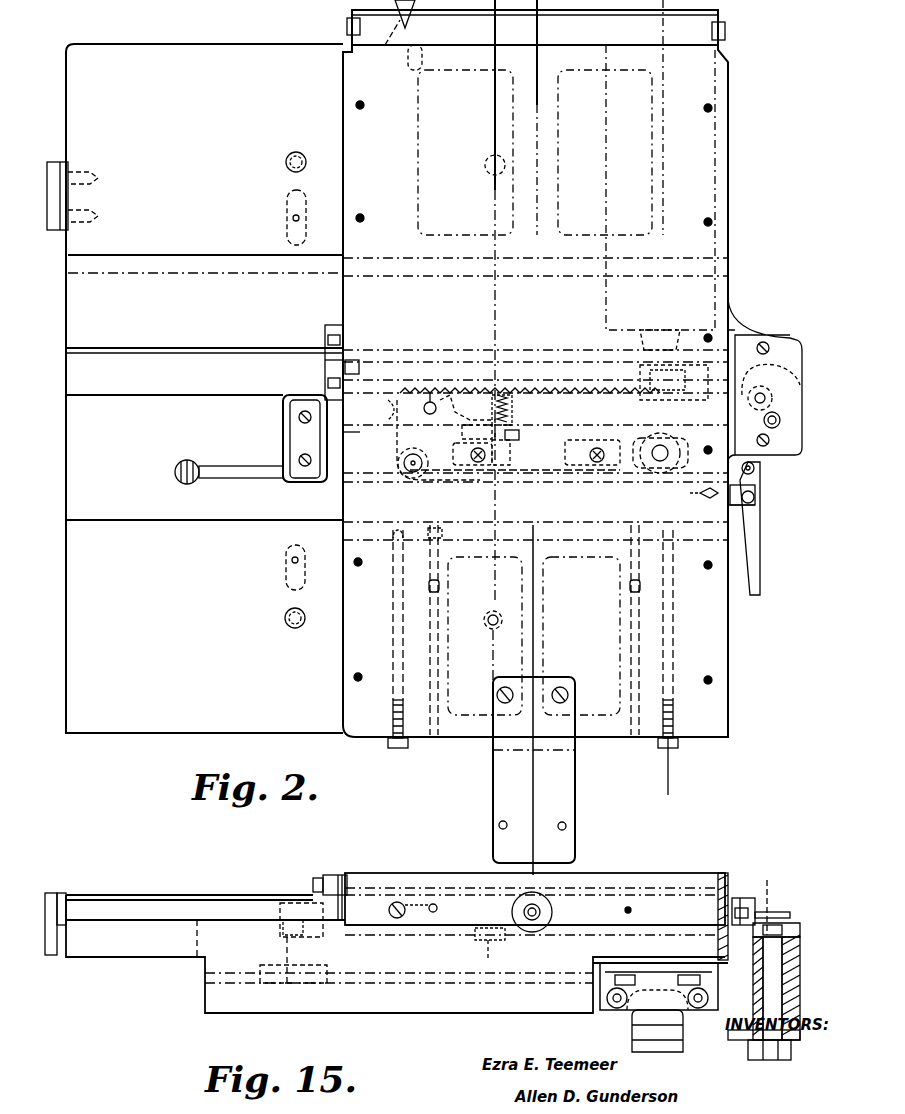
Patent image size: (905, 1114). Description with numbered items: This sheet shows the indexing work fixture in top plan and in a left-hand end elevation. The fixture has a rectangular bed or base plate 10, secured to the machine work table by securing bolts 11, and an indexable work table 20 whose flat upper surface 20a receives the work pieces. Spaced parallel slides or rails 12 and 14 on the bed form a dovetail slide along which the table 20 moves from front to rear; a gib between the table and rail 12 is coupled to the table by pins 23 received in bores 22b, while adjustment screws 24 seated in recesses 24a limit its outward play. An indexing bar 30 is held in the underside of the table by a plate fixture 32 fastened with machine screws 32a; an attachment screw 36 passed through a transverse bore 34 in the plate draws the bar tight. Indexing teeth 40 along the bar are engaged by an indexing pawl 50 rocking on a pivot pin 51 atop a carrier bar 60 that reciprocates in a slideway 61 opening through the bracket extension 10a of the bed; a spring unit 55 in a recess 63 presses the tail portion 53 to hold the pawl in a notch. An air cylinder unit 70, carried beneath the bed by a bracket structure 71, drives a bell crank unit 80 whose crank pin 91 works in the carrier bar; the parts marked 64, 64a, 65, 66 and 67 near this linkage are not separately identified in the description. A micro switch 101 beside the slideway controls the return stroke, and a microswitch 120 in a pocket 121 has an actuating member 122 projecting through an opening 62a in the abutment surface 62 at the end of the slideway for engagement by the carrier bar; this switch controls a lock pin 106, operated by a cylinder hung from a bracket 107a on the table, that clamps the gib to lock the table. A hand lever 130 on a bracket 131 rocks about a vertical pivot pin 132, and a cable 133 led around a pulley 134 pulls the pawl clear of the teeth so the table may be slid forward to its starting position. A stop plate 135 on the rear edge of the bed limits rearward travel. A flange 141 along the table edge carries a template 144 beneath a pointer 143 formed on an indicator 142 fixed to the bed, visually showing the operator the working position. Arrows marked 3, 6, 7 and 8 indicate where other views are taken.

In FIG. 2, the bed or base plate 10 is at (140, 720).
In FIG. 15, the bed or base plate 10 is at (110, 935).
In FIG. 2, the bracket forming extension 10a is at (750, 334).
In FIG. 15, the bracket forming extension 10a is at (780, 923).
In FIG. 15, the securing bolts 11 is at (280, 945).
In FIG. 2, the slide or rail 12 is at (210, 500).
In FIG. 2, the slide or rail 14 is at (210, 282).
In FIG. 2, the indexable work table 20 is at (728, 672).
In FIG. 15, the indexable work table 20 is at (368, 875).
In FIG. 2, the flat upper surface 20a is at (728, 640).
In FIG. 15, the flat upper surface 20a is at (672, 873).
In FIG. 2, the bores 22b is at (438, 516).
In FIG. 2, the pins 23 is at (428, 660).
In FIG. 2, the adjustment screws 24 is at (392, 660).
In FIG. 2, the recesses 24a is at (398, 532).
In FIG. 2, the indexing bar 30 is at (395, 365).
In FIG. 2, the plate fixture 32 is at (330, 325).
In FIG. 15, the plate fixture 32 is at (330, 875).
In FIG. 2, the machine screws 32a is at (328, 340).
In FIG. 2, the transverse bore 34 is at (345, 365).
In FIG. 2, the attachment screw 36 is at (328, 360).
In FIG. 2, the indexing teeth 40 is at (515, 395).
In FIG. 2, the indexing pawl 50 is at (450, 395).
In FIG. 2, the pivot pin 51 is at (420, 395).
In FIG. 2, the tail portion 53 is at (505, 395).
In FIG. 2, the spring unit 55 is at (515, 425).
In FIG. 2, the carrier bar 60 is at (572, 420).
In FIG. 15, the slideway 61 is at (785, 933).
In FIG. 2, the abutment surface 62 is at (695, 470).
In FIG. 15, the abutment surface 62 is at (668, 985).
In FIG. 2, the opening 62a is at (372, 435).
In FIG. 2, the recess or cut-out portion 63 is at (780, 418).
In FIG. 15, the bushing 64 is at (800, 950).
In FIG. 15, the nut 64a is at (785, 1058).
In FIG. 15, the motor 65 is at (632, 1025).
In FIG. 2, the roller 66 is at (790, 395).
In FIG. 2, the cam 67 is at (780, 375).
In FIG. 15, the cam 67 is at (700, 1002).
In FIG. 2, the air cylinder and piston unit 70 is at (716, 142).
In FIG. 15, the bracket structure 71 is at (608, 988).
In FIG. 15, the bell crank unit 80 is at (790, 1000).
In FIG. 15, the crank pin 91 is at (770, 912).
In FIG. 2, the micro switch 101 is at (530, 455).
In FIG. 2, the lock pin 106 is at (537, 610).
In FIG. 2, the bracket 107a is at (512, 800).
In FIG. 2, the microswitch 120 is at (300, 425).
In FIG. 2, the pocket or recess 121 is at (285, 443).
In FIG. 2, the switch actuating member 122 is at (385, 410).
In FIG. 2, the hand lever 130 is at (782, 588).
In FIG. 15, the hand lever 130 is at (750, 900).
In FIG. 2, the bracket 131 is at (752, 506).
In FIG. 15, the bracket 131 is at (740, 898).
In FIG. 2, the vertical pivot pin 132 is at (755, 493).
In FIG. 2, the cable 133 is at (595, 478).
In FIG. 2, the pulley 134 is at (400, 480).
In FIG. 2, the stop bracket or plate 135 is at (52, 178).
In FIG. 15, the stop bracket or plate 135 is at (52, 900).
In FIG. 2, the flange 141 is at (722, 18).
In FIG. 2, the indicator 142 is at (420, 45).
In FIG. 2, the pointer 143 is at (412, 20).
In FIG. 2, the template 144 is at (390, 30).
In FIG. 2, the section line 3 is at (693, 400).
In FIG. 2, the section line 6 is at (658, 792).
In FIG. 2, the section line 7 is at (503, 767).
In FIG. 2, the section line 8 is at (514, 859).